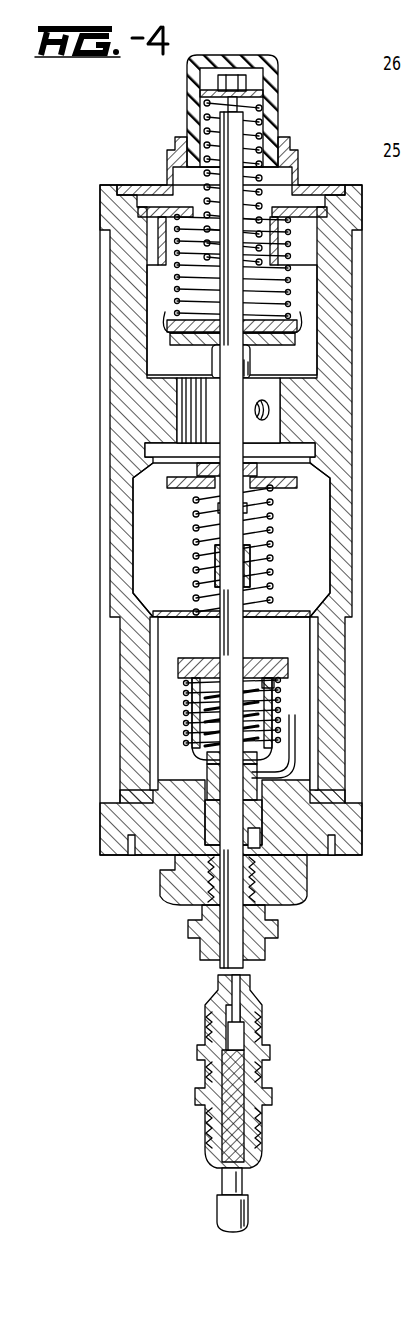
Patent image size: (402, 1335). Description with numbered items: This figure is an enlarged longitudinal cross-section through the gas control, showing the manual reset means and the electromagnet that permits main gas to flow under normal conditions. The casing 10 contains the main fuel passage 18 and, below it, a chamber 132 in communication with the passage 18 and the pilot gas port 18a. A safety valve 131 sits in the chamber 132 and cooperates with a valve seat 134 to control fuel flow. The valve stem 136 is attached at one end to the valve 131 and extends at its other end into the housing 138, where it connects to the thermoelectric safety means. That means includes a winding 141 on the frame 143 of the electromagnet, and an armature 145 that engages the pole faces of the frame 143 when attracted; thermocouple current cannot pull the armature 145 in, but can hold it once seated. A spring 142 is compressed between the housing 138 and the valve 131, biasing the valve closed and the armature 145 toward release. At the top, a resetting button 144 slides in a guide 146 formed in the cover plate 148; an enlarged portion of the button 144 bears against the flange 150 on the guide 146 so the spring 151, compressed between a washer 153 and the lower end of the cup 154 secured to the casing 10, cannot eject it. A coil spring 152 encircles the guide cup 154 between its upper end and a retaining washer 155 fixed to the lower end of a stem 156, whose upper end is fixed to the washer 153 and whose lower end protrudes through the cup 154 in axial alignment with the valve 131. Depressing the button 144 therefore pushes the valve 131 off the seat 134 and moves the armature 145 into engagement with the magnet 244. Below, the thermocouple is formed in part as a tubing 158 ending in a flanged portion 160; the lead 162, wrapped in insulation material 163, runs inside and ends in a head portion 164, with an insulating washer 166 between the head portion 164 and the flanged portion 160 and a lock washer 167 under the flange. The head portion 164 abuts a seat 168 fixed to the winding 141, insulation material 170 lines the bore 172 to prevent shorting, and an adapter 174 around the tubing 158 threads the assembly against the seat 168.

The casing 10 is at (97, 198).
The main fuel passage 18 is at (177, 412).
The pilot gas port 18a is at (255, 408).
The safety valve 131 is at (292, 480).
The chamber 132 is at (323, 560).
The valve seat 134 is at (195, 442).
The valve stem 136 is at (247, 535).
The housing 138 is at (316, 640).
The winding 141 is at (286, 695).
The spring 142 is at (273, 568).
The frame 143 is at (292, 762).
The resetting button 144 is at (279, 60).
The armature 145 is at (290, 668).
The guide 146 is at (297, 162).
The cover plate 148 is at (119, 184).
The flange 150 is at (280, 134).
The spring 151 is at (263, 112).
The coil spring 152 is at (292, 276).
The washer 153 is at (190, 66).
The cup 154 is at (175, 290).
The retaining washer 155 is at (294, 320).
The stem 156 is at (252, 360).
The tubing 158 is at (246, 966).
The flanged portion 160 is at (200, 872).
The lead 162 is at (266, 1052).
The insulation material 163 is at (246, 991).
The head portion 164 is at (262, 850).
The insulating washer 166 is at (205, 852).
The lock washer 167 is at (270, 870).
The seat 168 is at (212, 790).
The insulation material 170 is at (207, 755).
The bore 172 is at (262, 835).
The adapter 174 is at (280, 931).
The magnet 244 is at (276, 690).